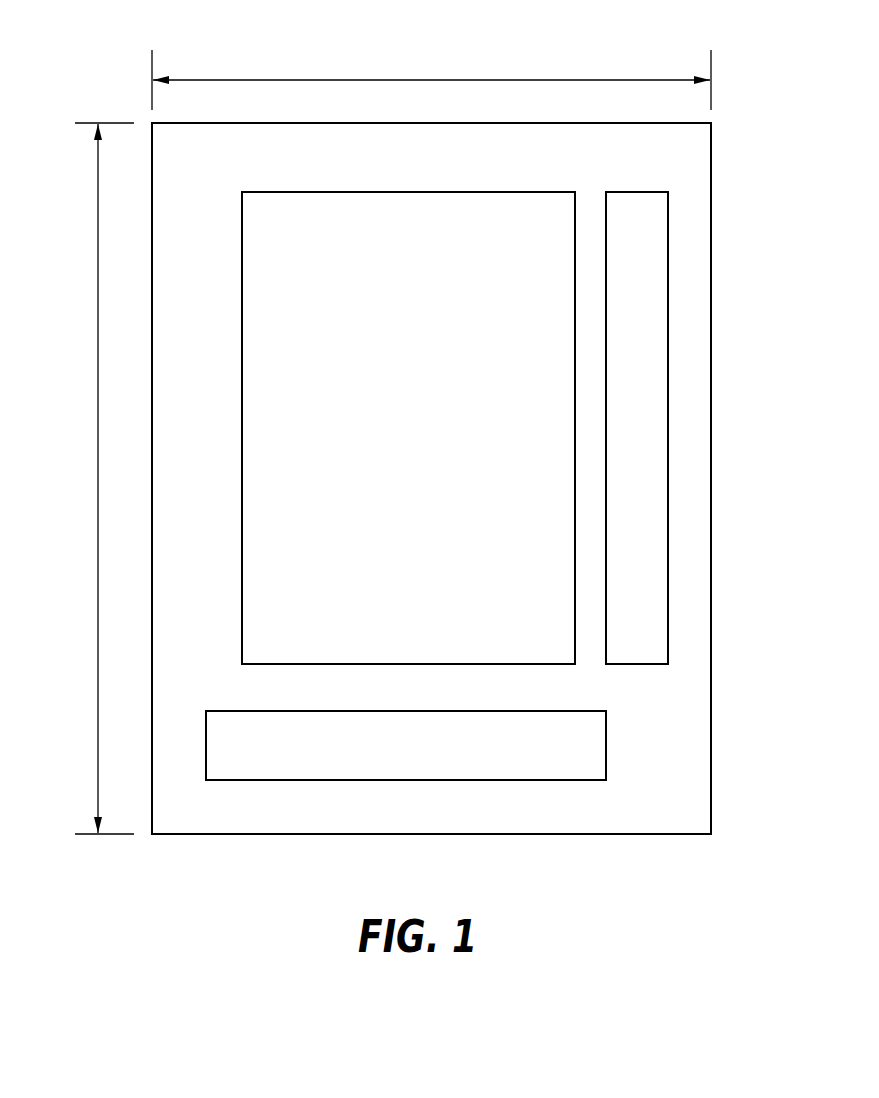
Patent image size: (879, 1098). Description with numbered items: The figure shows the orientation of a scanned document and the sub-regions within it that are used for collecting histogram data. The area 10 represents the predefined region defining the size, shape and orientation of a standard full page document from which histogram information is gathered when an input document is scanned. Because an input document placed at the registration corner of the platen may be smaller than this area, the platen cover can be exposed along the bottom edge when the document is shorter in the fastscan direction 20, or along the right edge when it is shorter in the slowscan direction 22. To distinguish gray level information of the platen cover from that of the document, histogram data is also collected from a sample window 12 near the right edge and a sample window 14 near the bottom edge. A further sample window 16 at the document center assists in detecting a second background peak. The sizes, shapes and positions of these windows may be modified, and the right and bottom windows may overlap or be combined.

The area 10 is at (713, 157).
The sample window 12 is at (664, 411).
The sample window 14 is at (390, 763).
The sample window 16 is at (567, 283).
The fastscan direction 20 is at (98, 478).
The slowscan direction 22 is at (420, 80).